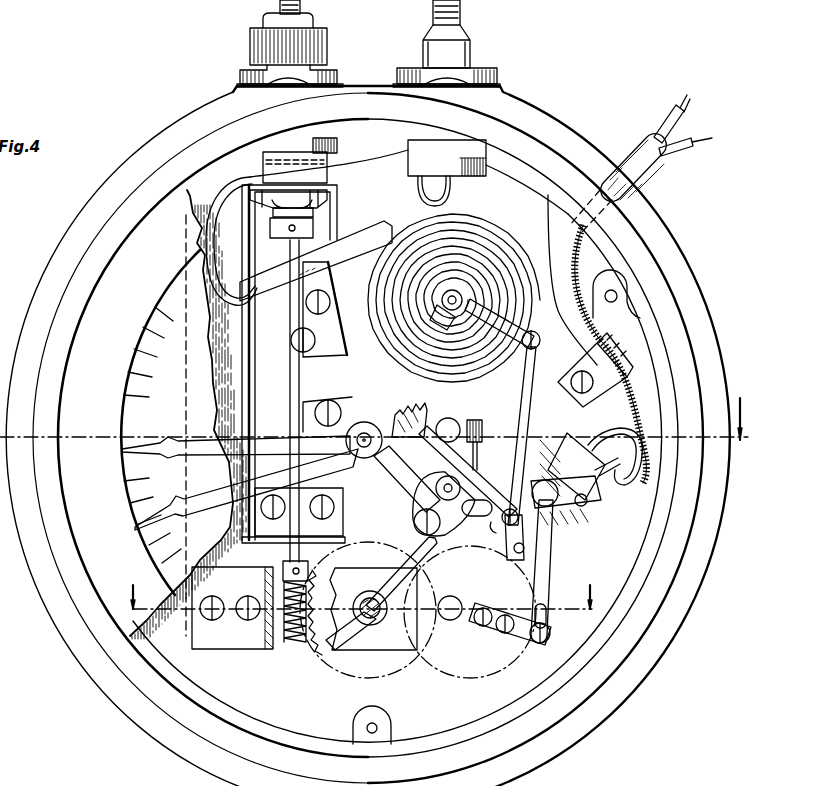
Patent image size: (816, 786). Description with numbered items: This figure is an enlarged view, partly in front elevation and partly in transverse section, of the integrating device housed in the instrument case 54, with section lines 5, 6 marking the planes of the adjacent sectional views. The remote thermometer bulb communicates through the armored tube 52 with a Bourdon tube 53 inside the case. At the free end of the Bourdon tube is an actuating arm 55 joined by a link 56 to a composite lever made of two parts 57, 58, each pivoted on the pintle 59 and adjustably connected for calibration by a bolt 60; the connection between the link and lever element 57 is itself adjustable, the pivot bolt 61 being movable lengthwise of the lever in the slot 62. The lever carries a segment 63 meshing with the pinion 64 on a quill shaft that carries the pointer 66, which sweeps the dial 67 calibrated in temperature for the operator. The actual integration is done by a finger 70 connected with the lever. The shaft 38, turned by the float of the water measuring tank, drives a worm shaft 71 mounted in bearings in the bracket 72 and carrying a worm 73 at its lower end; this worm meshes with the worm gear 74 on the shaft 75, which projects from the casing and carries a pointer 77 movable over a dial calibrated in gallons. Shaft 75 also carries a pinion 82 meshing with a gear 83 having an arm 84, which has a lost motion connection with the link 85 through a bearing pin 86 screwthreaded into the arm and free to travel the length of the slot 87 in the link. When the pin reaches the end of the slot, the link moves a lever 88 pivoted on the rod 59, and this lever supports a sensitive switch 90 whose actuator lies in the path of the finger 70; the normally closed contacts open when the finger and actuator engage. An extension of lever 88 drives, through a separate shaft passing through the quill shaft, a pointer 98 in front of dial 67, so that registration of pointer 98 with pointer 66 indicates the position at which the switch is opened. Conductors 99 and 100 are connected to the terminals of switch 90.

The shaft 38 is at (280, 5).
The armored tube 52 is at (462, 8).
The Bourdon tube 53 is at (500, 242).
The instrument case 54 is at (668, 268).
The actuating arm 55 is at (541, 337).
The link 56 is at (528, 404).
The lever element 57 is at (484, 492).
The lever part 58 is at (429, 488).
The pintle 59 is at (424, 491).
The bolt 60 is at (488, 545).
The pivot bolt 61 is at (506, 547).
The slot 62 is at (517, 565).
The segment 63 is at (400, 400).
The pinion 64 is at (363, 420).
The pointer 66 is at (196, 443).
The dial 67 is at (131, 384).
The finger 70 is at (470, 470).
The worm shaft 71 is at (276, 290).
The bracket 72 is at (246, 428).
The worm 73 is at (294, 630).
The worm gear 74 is at (325, 652).
The shaft 75 is at (372, 626).
The pointer 77 is at (422, 565).
The pinion 82 is at (373, 609).
The gear 83 is at (470, 674).
The arm 84 is at (516, 644).
The link 85 is at (551, 558).
The bearing pin 86 is at (550, 638).
The slot 87 is at (548, 618).
The lever 88 is at (582, 520).
The sensitive switch 90 is at (568, 436).
The pointer 98 is at (200, 500).
The conductor 99 is at (684, 100).
The conductor 100 is at (697, 122).
The section line 5- 5 is at (354, 589).
The section line 6- 6 is at (376, 411).